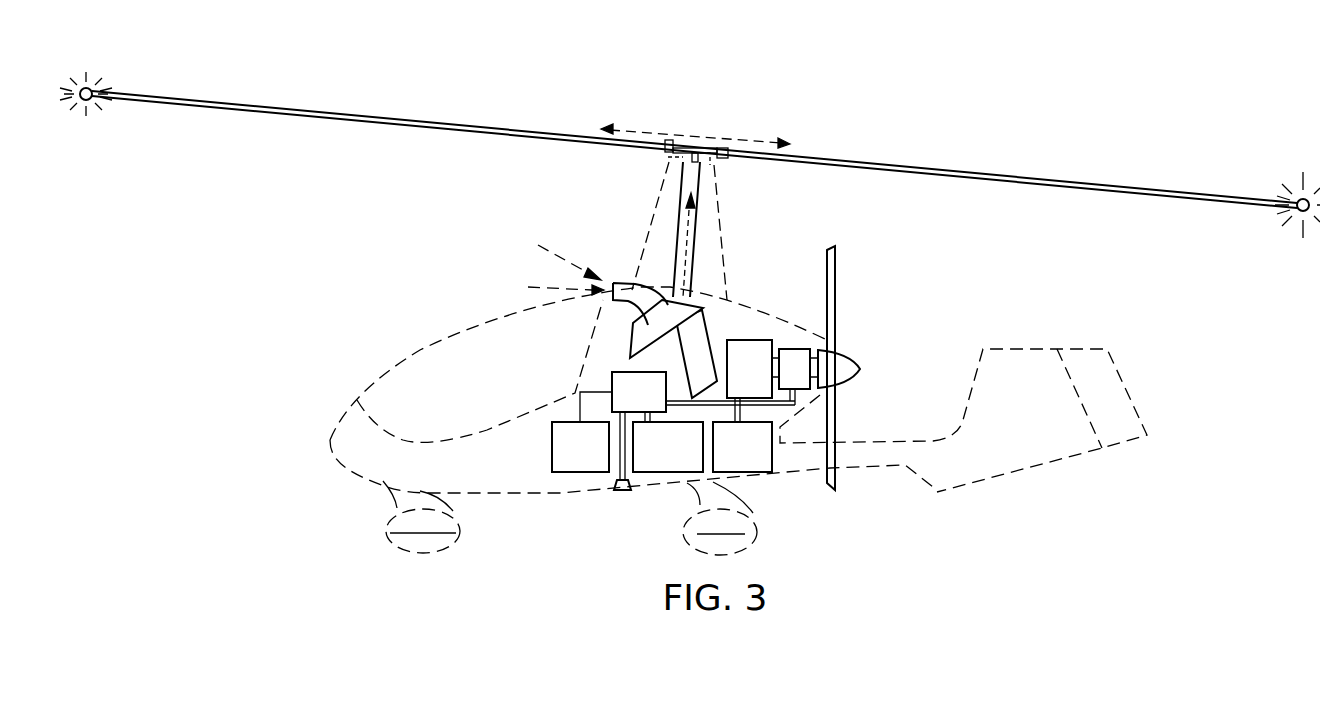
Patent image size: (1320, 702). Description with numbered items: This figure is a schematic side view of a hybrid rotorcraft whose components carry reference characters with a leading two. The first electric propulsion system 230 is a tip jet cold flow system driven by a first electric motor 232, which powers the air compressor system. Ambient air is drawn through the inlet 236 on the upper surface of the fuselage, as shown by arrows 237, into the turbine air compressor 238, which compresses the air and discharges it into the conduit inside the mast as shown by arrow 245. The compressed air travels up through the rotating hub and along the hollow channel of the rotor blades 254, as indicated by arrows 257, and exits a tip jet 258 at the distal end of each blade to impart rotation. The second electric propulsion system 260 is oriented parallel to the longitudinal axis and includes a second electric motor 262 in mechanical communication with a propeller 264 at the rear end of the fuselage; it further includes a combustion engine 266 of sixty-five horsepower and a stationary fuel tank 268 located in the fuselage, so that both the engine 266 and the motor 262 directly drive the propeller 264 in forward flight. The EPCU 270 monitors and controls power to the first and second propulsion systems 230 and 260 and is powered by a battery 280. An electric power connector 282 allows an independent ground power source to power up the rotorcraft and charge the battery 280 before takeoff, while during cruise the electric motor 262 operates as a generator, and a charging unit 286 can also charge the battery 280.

The first electric propulsion system 230 is at (665, 283).
The first electric motor 232 is at (690, 343).
The inlet 236 is at (613, 283).
The arrows 237 is at (538, 287).
The turbine air compressor 238 is at (620, 343).
The arrow 245 is at (692, 240).
The rotor blades 254 is at (380, 117).
The arrows 257 is at (742, 141).
The tip jet 258 is at (90, 88).
The second electric propulsion system 260 is at (846, 385).
The second electric motor 262 is at (796, 349).
The propeller 264 is at (835, 302).
The combustion engine 266 is at (765, 340).
The fuel tank 268 is at (753, 473).
The EPCU 270 is at (610, 385).
The battery 280 is at (657, 473).
The electric power connector 282 is at (612, 486).
The charging unit 286 is at (550, 447).